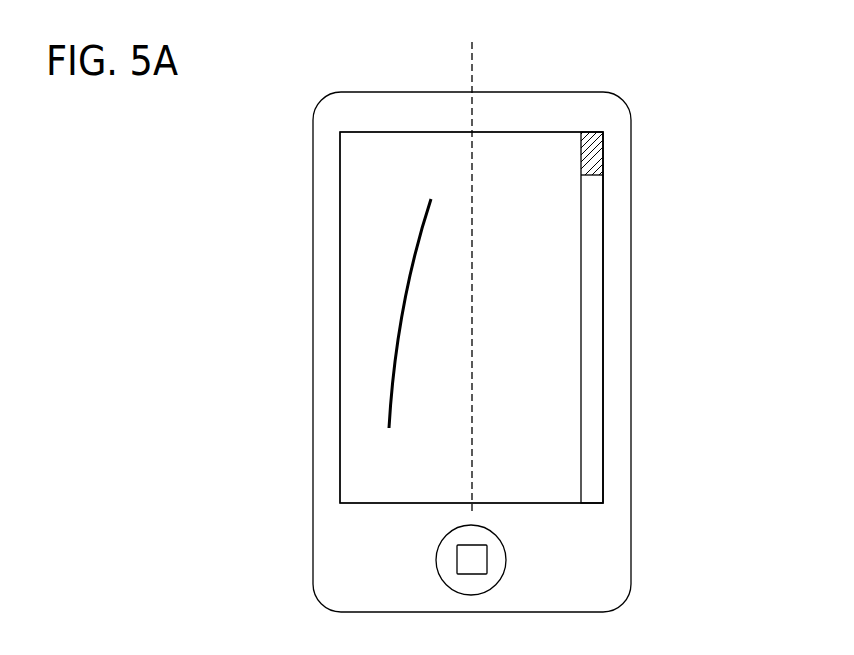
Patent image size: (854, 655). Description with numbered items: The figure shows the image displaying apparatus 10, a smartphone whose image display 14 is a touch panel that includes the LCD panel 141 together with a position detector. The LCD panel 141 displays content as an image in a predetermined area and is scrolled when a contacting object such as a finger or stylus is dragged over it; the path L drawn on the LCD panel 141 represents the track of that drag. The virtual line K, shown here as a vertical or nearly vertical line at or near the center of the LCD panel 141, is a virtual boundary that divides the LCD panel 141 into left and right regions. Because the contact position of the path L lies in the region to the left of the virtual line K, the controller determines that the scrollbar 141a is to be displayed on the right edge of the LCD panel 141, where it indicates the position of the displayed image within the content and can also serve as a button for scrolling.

The image displaying apparatus 10 is at (652, 66).
The image display 14 is at (337, 203).
The LCD panel 141 is at (358, 452).
The scrollbar 141a is at (593, 197).
The virtual line K is at (468, 60).
The path L is at (399, 318).